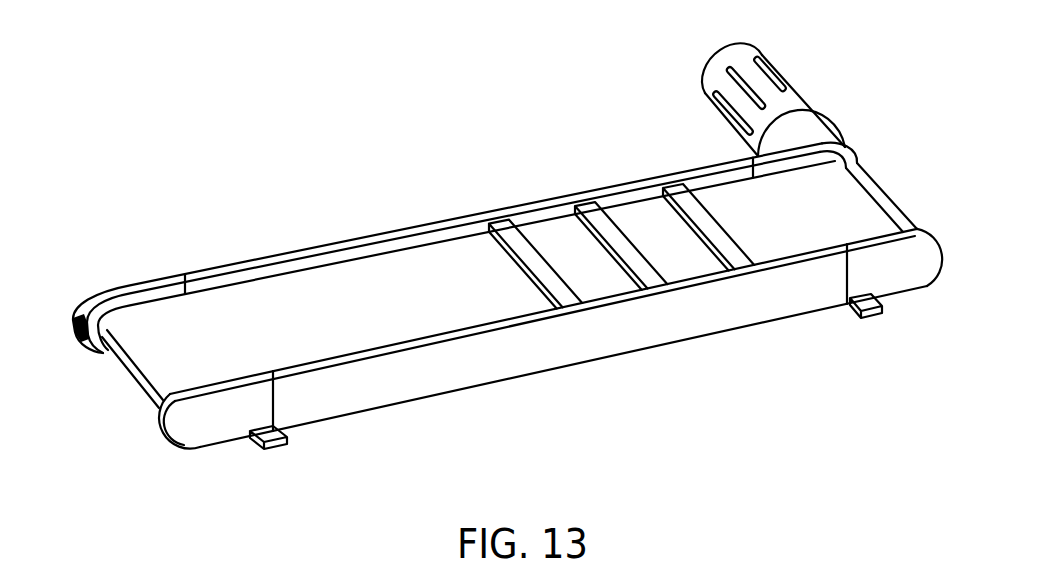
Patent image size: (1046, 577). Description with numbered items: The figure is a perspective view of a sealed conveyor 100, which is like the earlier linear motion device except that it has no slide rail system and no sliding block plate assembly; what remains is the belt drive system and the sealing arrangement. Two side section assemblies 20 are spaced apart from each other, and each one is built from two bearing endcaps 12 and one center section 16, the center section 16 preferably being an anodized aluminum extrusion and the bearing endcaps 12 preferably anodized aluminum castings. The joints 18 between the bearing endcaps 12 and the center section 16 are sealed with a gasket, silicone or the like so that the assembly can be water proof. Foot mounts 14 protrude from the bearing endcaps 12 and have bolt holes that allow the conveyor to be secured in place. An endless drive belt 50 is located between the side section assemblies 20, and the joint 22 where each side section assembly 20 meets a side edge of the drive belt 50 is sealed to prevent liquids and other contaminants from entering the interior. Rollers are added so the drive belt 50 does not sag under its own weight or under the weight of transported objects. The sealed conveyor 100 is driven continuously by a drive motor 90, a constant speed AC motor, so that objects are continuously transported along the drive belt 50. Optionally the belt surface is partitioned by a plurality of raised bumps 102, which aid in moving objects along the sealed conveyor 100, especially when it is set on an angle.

The sealed conveyor 100 is at (411, 152).
The raised bumps 102 is at (676, 215).
The drive motor 90 is at (790, 85).
The drive belt 50 is at (843, 200).
The joints 18 is at (183, 276).
The joint 22 is at (135, 308).
The center section 16 is at (495, 367).
The side section assemblies 20 is at (683, 330).
The bearing endcaps 12 is at (214, 430).
The foot mounts 14 is at (270, 447).